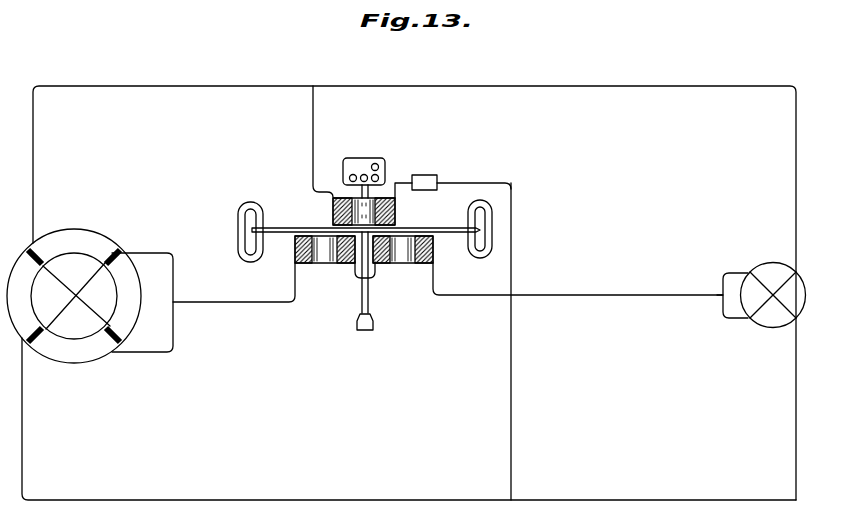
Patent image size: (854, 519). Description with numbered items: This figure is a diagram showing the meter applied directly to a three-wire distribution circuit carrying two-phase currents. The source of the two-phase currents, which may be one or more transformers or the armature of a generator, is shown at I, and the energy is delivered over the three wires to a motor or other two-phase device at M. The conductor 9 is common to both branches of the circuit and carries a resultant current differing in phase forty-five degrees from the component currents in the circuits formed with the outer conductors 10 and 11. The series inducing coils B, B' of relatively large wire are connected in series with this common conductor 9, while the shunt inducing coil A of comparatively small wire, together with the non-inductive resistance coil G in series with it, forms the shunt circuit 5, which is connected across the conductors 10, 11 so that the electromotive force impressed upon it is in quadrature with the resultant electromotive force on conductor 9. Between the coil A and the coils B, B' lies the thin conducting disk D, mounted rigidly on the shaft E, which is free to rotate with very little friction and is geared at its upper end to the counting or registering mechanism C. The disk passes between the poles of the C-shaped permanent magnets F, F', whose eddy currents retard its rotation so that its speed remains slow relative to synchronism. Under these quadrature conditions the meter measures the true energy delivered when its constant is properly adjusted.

The shunt circuit wire 5 is at (313, 150).
The common conductor 9 is at (242, 302).
The outer conductor 10 is at (213, 86).
The outer conductor 11 is at (313, 500).
The inducing coil A is at (333, 206).
The inducing coil B is at (312, 249).
The inducing coil B' is at (415, 249).
The registering mechanism C is at (364, 169).
The disk D is at (431, 228).
The shaft E is at (368, 288).
The permanent magnet F is at (248, 222).
The permanent magnet F' is at (487, 222).
The non-inductive resistance coil G is at (425, 175).
The source of two-phase currents I is at (90, 284).
The motor M is at (619, 309).